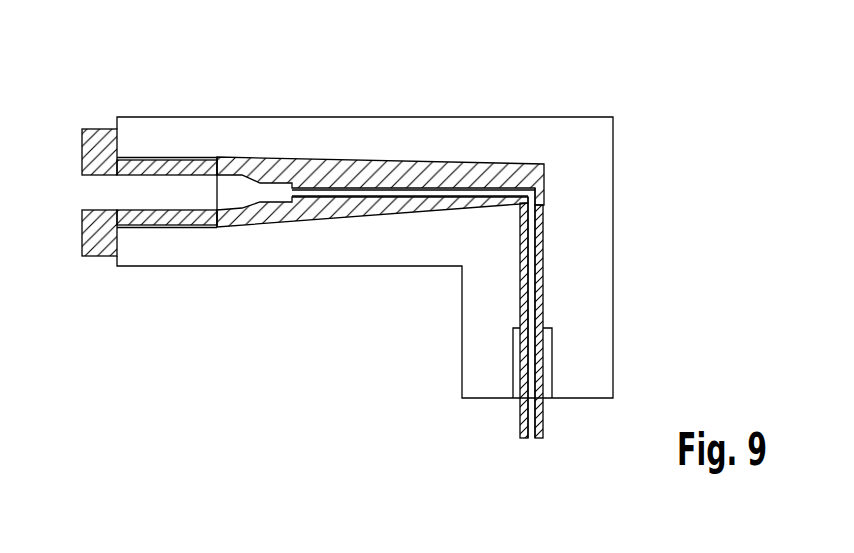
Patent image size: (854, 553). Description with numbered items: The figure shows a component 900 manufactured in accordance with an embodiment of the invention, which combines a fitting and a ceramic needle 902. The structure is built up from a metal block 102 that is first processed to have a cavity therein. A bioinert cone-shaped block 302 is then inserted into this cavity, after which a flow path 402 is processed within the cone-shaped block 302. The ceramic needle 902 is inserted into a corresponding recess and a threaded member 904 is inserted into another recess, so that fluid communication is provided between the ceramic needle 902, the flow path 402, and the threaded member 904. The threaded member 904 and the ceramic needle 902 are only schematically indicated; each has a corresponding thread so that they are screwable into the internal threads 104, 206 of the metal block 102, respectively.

The component 900 is at (662, 76).
The metal block 102 is at (597, 155).
The internal thread 104 is at (518, 368).
The internal thread 206 is at (167, 160).
The bioinert cone-shaped block 302 is at (366, 172).
The flow path 402 is at (432, 192).
The ceramic needle 902 is at (541, 268).
The threaded member 904 is at (102, 243).